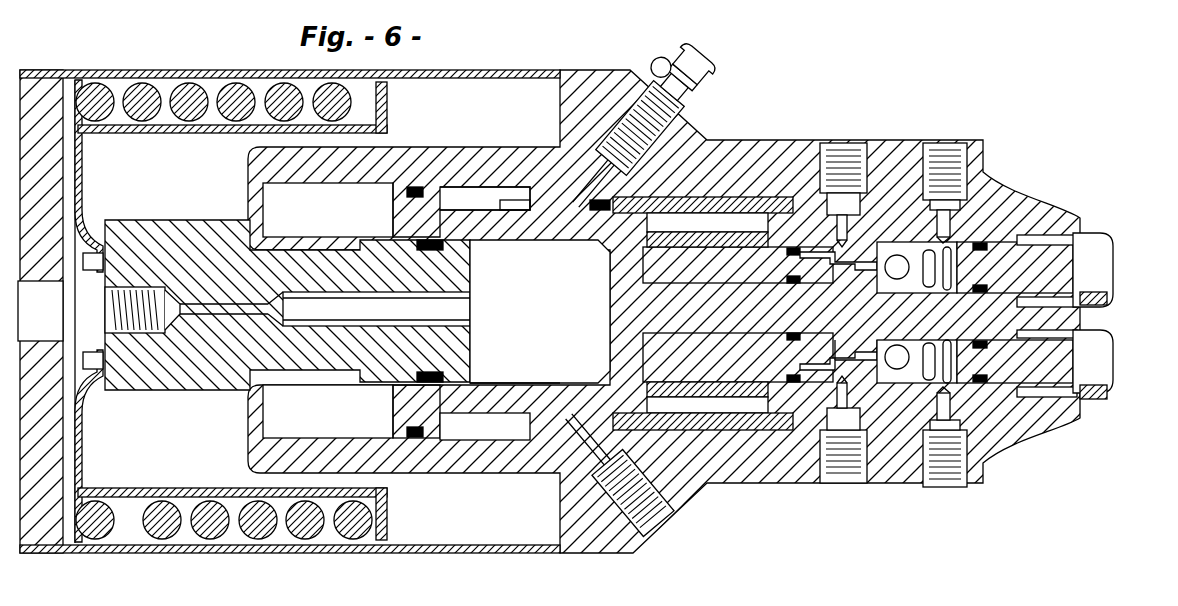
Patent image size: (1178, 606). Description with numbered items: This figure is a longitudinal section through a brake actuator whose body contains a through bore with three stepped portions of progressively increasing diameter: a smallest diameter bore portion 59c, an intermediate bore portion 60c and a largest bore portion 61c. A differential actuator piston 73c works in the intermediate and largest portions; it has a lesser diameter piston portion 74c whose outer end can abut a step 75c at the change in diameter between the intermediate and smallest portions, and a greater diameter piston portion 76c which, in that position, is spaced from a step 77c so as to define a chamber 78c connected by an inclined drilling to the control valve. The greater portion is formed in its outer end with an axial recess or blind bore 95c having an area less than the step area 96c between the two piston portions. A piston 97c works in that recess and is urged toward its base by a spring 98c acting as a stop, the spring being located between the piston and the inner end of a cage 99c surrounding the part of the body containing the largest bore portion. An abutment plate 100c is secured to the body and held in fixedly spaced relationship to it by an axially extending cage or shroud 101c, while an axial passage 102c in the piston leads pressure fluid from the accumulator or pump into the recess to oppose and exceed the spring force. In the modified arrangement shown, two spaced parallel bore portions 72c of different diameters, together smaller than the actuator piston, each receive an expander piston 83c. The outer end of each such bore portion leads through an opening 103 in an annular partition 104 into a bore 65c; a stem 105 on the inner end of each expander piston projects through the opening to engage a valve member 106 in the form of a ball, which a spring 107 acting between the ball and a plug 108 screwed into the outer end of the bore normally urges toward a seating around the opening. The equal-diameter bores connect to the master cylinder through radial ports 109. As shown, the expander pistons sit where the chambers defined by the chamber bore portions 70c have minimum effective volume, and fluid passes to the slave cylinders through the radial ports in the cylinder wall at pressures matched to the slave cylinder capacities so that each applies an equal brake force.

The smallest diameter bore portion 59c is at (747, 247).
The intermediate bore portion 60c is at (588, 212).
The largest diameter bore portion 61c is at (493, 184).
The bore 65c is at (950, 217).
The chamber bore portion 70c is at (837, 250).
The bore portion / radial port 72c is at (873, 243).
The differential actuator piston 73c is at (567, 390).
The lesser diameter piston portion 74c is at (617, 393).
The step 75c is at (800, 200).
The greater diameter piston portion 76c is at (410, 422).
The step 77c is at (513, 210).
The chamber 78c is at (470, 428).
The expander piston 83c is at (683, 260).
The recess or blind bore 95c is at (570, 334).
The step area 96c is at (448, 190).
The piston 97c is at (170, 240).
The spring 98c is at (142, 98).
The cage 99c is at (240, 493).
The abutment plate 100c is at (42, 198).
The cage or shroud 101c is at (177, 547).
The axial passage 102c is at (232, 310).
The opening 103 is at (905, 240).
The annular partition 104 is at (923, 172).
The stem 105 is at (833, 252).
The valve member 106 is at (899, 365).
The spring 107 is at (1073, 238).
The plug 108 is at (1083, 270).
The radial ports 109 is at (980, 243).